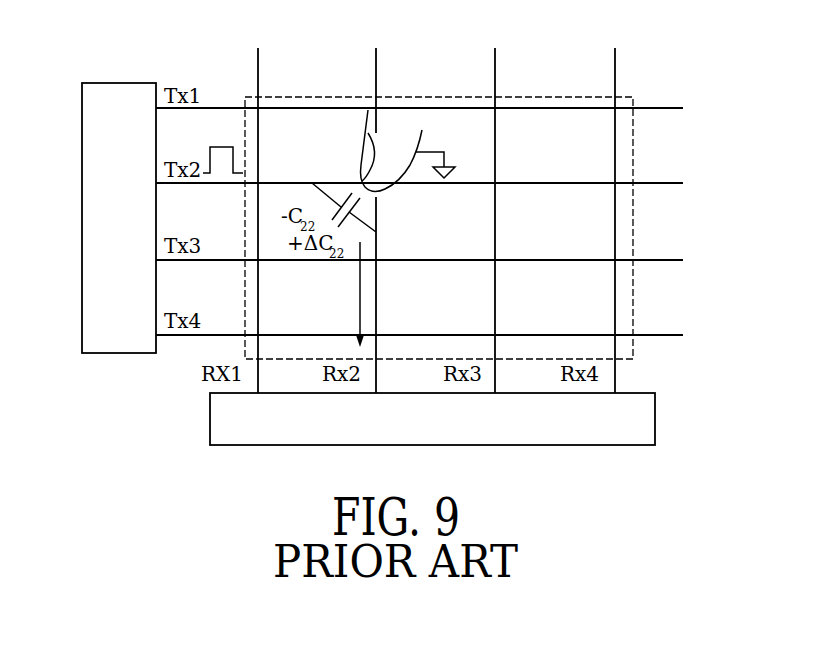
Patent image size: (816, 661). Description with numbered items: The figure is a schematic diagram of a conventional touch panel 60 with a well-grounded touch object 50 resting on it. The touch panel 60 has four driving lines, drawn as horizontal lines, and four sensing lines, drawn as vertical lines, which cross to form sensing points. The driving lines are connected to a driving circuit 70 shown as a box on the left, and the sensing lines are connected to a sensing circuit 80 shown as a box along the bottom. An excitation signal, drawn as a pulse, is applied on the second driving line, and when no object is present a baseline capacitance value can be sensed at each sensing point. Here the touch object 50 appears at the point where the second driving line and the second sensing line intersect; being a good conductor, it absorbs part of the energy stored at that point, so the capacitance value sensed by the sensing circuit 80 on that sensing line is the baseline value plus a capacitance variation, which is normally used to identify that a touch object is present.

The finger 50 is at (363, 150).
The touch panel 60 is at (532, 97).
The driving circuit 70 is at (110, 82).
The sensing circuit 80 is at (650, 425).